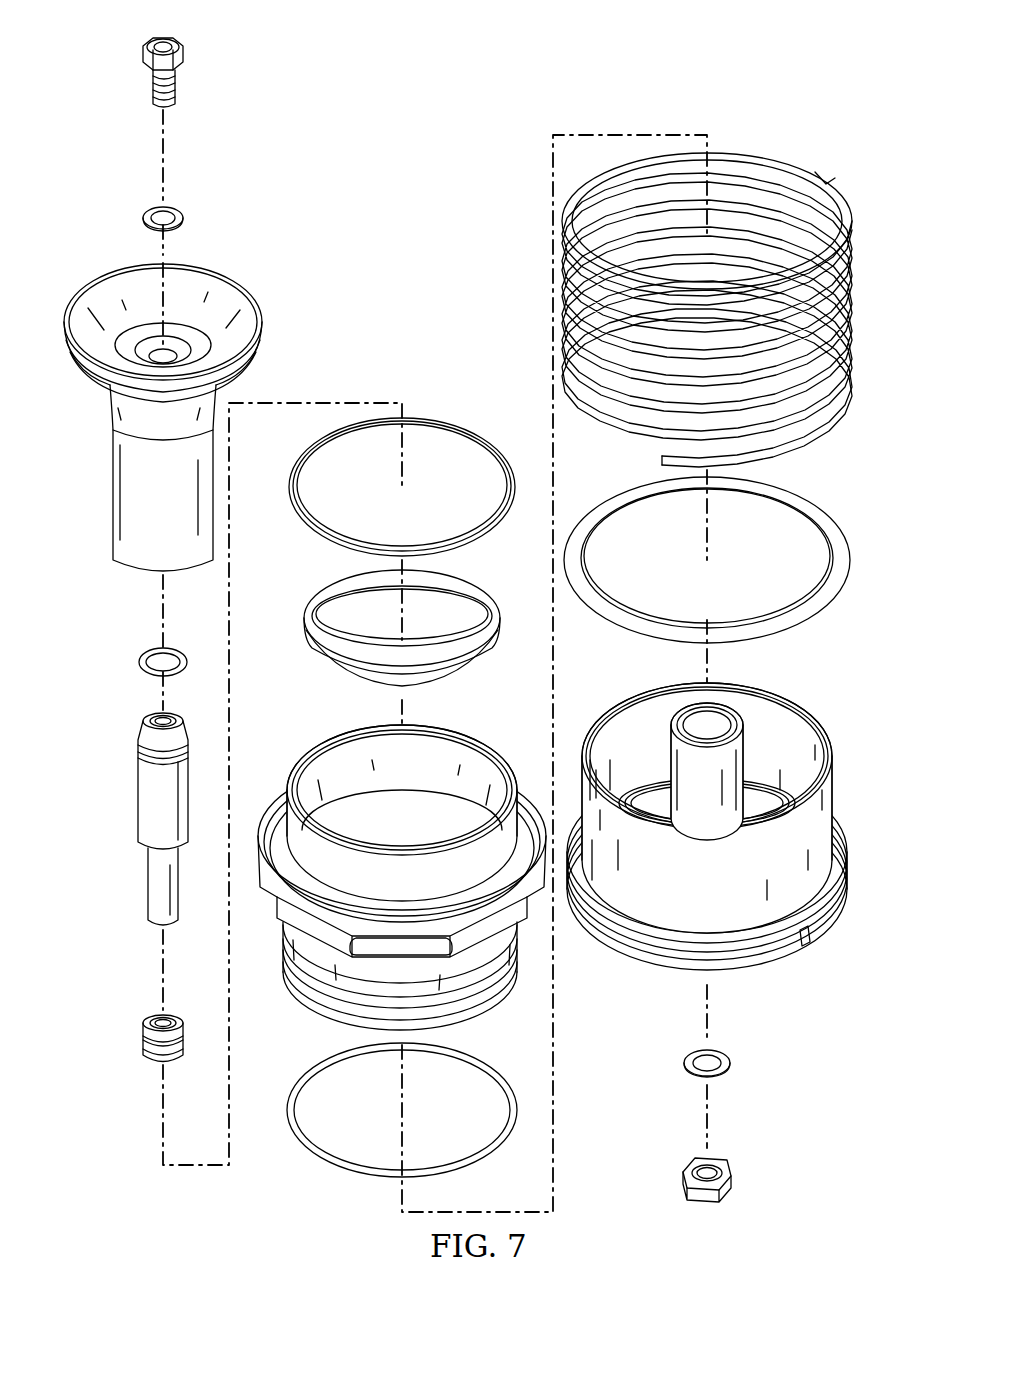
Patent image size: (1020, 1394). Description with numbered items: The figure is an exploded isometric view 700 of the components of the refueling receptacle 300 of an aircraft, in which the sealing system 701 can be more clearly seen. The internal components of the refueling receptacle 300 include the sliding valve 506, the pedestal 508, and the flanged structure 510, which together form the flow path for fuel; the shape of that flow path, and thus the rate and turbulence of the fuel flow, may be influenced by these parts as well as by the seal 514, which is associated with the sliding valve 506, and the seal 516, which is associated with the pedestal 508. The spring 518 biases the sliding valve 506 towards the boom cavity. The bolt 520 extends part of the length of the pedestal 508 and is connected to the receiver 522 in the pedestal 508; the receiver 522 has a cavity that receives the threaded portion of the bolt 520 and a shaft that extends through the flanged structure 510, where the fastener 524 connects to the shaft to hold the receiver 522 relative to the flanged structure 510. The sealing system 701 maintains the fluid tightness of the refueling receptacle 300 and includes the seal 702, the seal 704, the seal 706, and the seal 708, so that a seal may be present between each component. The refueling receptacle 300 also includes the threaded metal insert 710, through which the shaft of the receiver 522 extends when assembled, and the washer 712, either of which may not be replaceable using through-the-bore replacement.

The refueling receptacle 300 is at (752, 87).
The sliding valve 506 is at (317, 743).
The pedestal 508 is at (212, 262).
The flanged structure 510 is at (776, 690).
The seal 514 is at (488, 445).
The seal 516 is at (320, 596).
The spring 518 is at (760, 160).
The bolt 520 is at (152, 80).
The receiver 522 is at (138, 790).
The fastener 524 is at (733, 1178).
The view 700 is at (620, 104).
The sealing system 701 is at (536, 126).
The seal 702 is at (142, 219).
The seal 704 is at (140, 664).
The seal 706 is at (338, 1170).
The seal 708 is at (795, 496).
The threaded metal insert 710 is at (143, 1050).
The washer 712 is at (733, 1066).